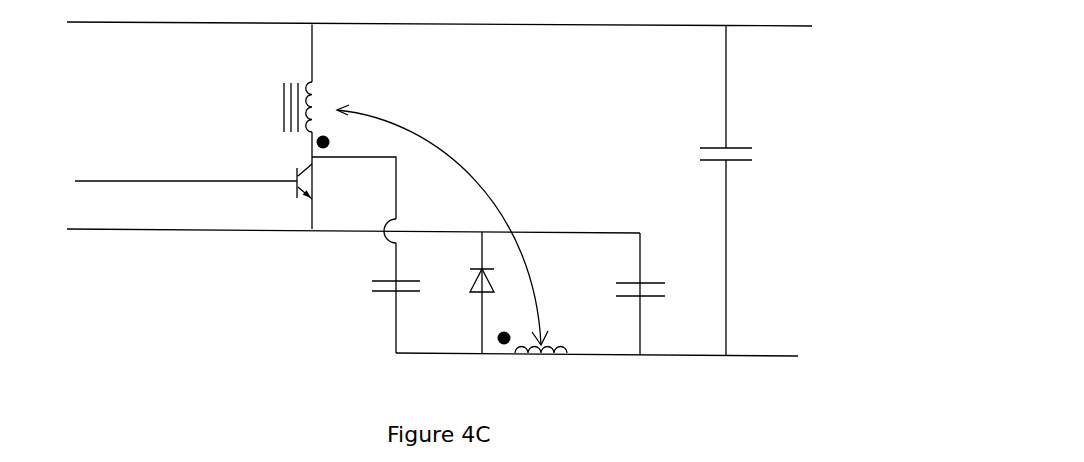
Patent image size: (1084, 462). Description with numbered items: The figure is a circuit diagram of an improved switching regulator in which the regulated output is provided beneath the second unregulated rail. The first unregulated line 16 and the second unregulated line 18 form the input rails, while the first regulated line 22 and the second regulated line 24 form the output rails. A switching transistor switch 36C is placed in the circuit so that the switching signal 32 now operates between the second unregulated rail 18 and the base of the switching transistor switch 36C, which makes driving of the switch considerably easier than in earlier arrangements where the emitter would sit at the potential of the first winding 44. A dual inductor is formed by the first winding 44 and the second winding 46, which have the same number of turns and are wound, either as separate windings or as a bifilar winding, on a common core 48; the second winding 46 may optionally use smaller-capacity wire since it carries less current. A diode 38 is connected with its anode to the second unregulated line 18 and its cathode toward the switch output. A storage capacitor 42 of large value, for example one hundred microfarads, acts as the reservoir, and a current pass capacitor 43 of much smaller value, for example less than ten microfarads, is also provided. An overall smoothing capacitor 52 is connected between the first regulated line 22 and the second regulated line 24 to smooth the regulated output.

The first unregulated line 16 is at (130, 23).
The second unregulated line 18 is at (138, 228).
The first regulated line 22 is at (757, 28).
The second regulated line 24 is at (773, 354).
The switching signal 32 is at (178, 180).
The switching transistor switch 36C is at (308, 173).
The diode 38 is at (475, 290).
The storage capacitor 42 is at (623, 289).
The current pass capacitor 43 is at (384, 291).
The first winding 44 is at (313, 101).
The second winding 46 is at (553, 350).
The common core 48 is at (283, 102).
The overall smoothing capacitor 52 is at (700, 148).